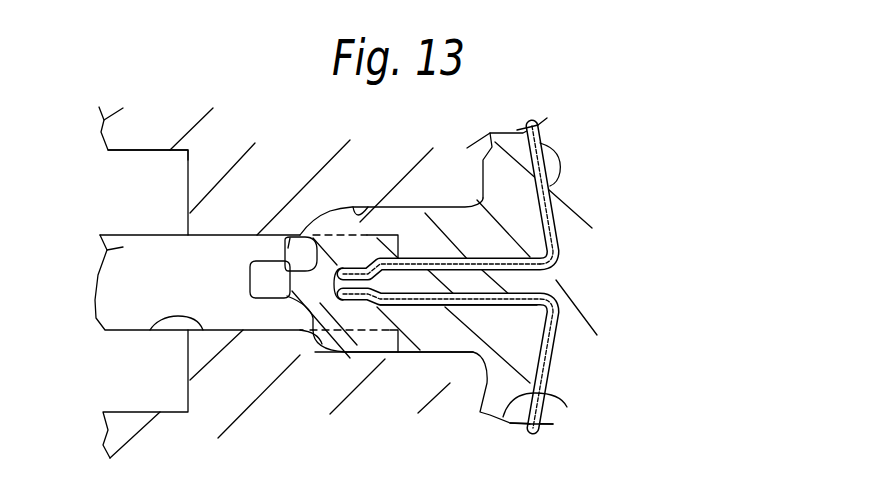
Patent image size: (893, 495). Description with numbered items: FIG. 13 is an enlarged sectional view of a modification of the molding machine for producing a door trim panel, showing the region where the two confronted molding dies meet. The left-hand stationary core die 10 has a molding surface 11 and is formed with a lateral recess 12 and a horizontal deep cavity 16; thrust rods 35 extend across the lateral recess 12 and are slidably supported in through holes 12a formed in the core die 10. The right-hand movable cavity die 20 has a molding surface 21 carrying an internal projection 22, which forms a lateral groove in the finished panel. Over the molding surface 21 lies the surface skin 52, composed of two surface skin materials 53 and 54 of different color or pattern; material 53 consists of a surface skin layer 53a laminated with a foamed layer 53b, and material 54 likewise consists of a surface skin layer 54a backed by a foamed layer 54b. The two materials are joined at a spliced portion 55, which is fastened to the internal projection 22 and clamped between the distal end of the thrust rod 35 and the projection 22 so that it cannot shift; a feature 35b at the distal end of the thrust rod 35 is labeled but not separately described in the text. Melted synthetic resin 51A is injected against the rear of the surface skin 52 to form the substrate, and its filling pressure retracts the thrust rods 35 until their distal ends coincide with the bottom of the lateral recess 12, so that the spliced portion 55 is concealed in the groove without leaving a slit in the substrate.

The core die 10 is at (262, 173).
The molding surface 11 is at (490, 133).
The lateral recess 12 is at (353, 207).
The through hole 12a is at (150, 332).
The horizontal deep cavity 16 is at (131, 153).
The cavity die 20 is at (426, 279).
The molding surface 21 is at (508, 427).
The internal projection 22 is at (505, 283).
The thrust rod 35 is at (100, 244).
The bent end of plate 35b is at (250, 277).
The melted synthetic resin 51A is at (360, 342).
The surface skin 52 is at (427, 308).
The surface skin material 53 is at (545, 150).
The surface skin layer 53a is at (563, 164).
The foamed layer 53b is at (517, 130).
The surface skin material 54 is at (556, 371).
The surface skin layer 54a is at (567, 407).
The foamed layer 54b is at (520, 409).
The spliced portion 55 is at (322, 280).